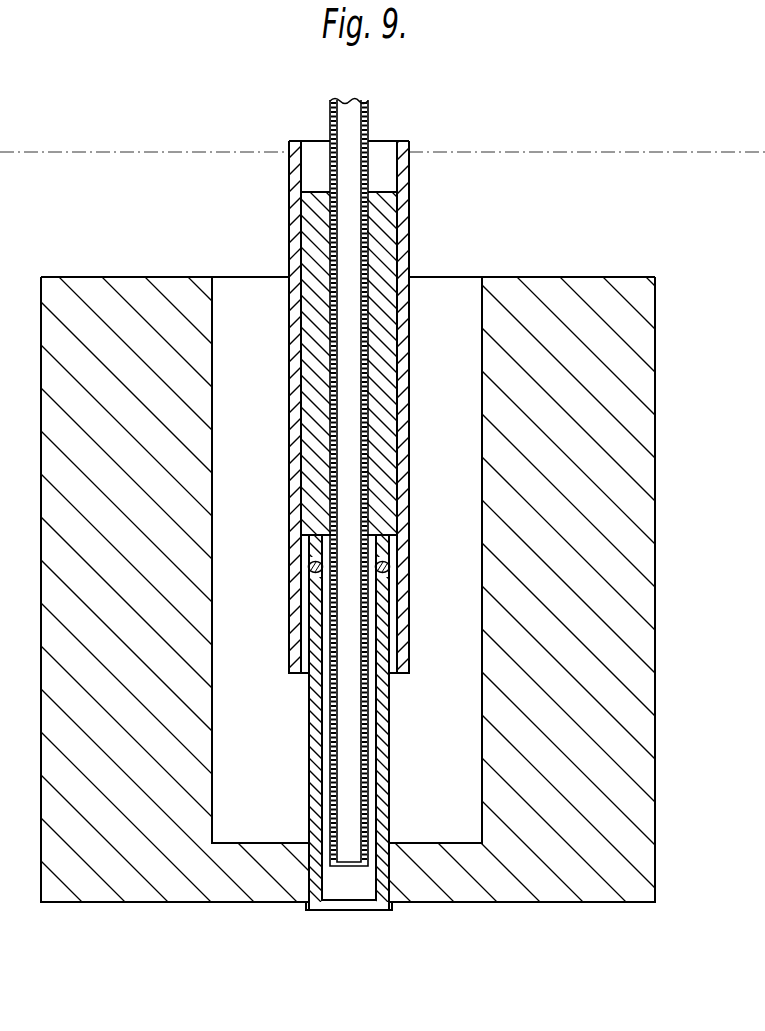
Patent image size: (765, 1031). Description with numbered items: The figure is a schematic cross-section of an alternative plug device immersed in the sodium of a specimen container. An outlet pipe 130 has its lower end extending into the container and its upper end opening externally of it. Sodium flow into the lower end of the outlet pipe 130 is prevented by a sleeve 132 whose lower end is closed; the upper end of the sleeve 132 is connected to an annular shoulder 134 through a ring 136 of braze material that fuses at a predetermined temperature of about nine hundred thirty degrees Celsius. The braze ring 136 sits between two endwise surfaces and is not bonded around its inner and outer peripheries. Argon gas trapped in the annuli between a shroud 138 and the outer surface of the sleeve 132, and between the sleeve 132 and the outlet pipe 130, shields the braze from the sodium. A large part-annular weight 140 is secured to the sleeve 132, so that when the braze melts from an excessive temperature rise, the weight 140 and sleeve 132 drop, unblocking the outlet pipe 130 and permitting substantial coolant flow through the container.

The outlet pipe 130 is at (330, 721).
The sleeve 132 is at (387, 731).
The annular shoulder 134 is at (313, 553).
The ring of braze material 136 is at (389, 568).
The shroud 138 is at (403, 480).
The weight 140 is at (643, 645).